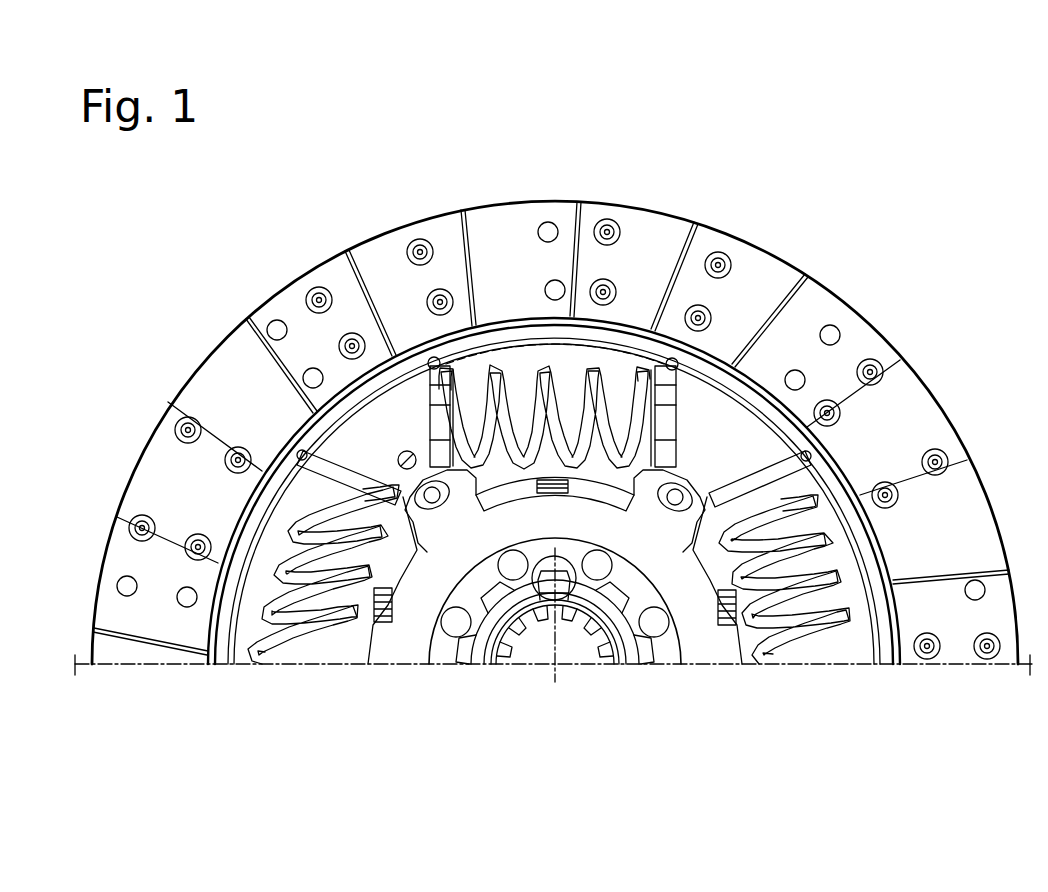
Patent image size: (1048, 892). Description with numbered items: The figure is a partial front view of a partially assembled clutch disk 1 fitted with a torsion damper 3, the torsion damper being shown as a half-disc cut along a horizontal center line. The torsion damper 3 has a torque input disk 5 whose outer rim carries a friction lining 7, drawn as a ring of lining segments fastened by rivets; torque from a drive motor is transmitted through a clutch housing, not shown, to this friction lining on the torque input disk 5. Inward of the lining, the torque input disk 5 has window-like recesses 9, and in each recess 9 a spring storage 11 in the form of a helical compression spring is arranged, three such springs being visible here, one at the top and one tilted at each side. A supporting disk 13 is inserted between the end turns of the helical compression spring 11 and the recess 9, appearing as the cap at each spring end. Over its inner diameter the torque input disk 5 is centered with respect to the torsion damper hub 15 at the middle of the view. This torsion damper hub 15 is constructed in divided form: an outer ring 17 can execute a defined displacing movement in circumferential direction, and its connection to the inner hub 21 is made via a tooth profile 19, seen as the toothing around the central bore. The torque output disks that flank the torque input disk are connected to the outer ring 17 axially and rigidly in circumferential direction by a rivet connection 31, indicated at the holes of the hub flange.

The clutch disk 1 is at (956, 692).
The torsion damper 3 is at (785, 706).
The torque input disk 5 is at (735, 438).
The friction lining 7 is at (747, 310).
The window-like recess 9 is at (568, 365).
The spring storage 11 is at (507, 400).
The supporting disk 13 is at (680, 385).
The torsion damper hub 15 is at (484, 670).
The outer ring 17 is at (655, 650).
The tooth profile 19 is at (558, 607).
The inner hub 21 is at (616, 650).
The rivet connection 31 is at (457, 622).